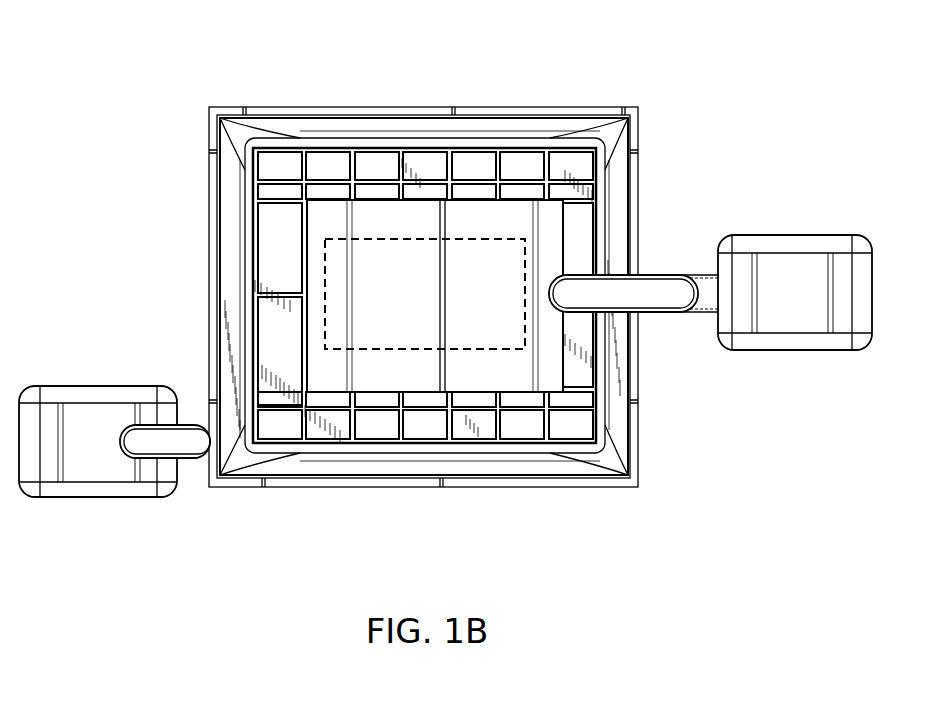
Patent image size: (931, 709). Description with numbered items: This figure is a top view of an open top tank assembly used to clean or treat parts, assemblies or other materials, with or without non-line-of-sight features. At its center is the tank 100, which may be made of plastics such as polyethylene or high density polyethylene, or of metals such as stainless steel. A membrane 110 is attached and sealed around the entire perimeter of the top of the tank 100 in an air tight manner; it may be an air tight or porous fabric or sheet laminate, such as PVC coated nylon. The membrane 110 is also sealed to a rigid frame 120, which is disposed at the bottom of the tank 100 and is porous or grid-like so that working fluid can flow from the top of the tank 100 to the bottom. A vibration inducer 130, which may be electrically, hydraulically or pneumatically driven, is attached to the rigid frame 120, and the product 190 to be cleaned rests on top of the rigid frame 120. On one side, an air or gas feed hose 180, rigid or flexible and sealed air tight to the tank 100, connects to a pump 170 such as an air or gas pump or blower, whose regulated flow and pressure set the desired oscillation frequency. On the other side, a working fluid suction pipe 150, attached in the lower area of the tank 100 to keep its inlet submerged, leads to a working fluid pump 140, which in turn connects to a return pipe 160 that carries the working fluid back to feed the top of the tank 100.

The tank 100 is at (206, 144).
The membrane 110 is at (620, 179).
The rigid frame 120 is at (290, 442).
The vibration inducer 130 is at (468, 350).
The working fluid pump 140 is at (770, 350).
The working fluid suction pipe 150 is at (647, 313).
The return pipe 160 is at (645, 275).
The pump 170 is at (100, 500).
The air or gas feed hose 180 is at (198, 423).
The product 190 is at (377, 218).